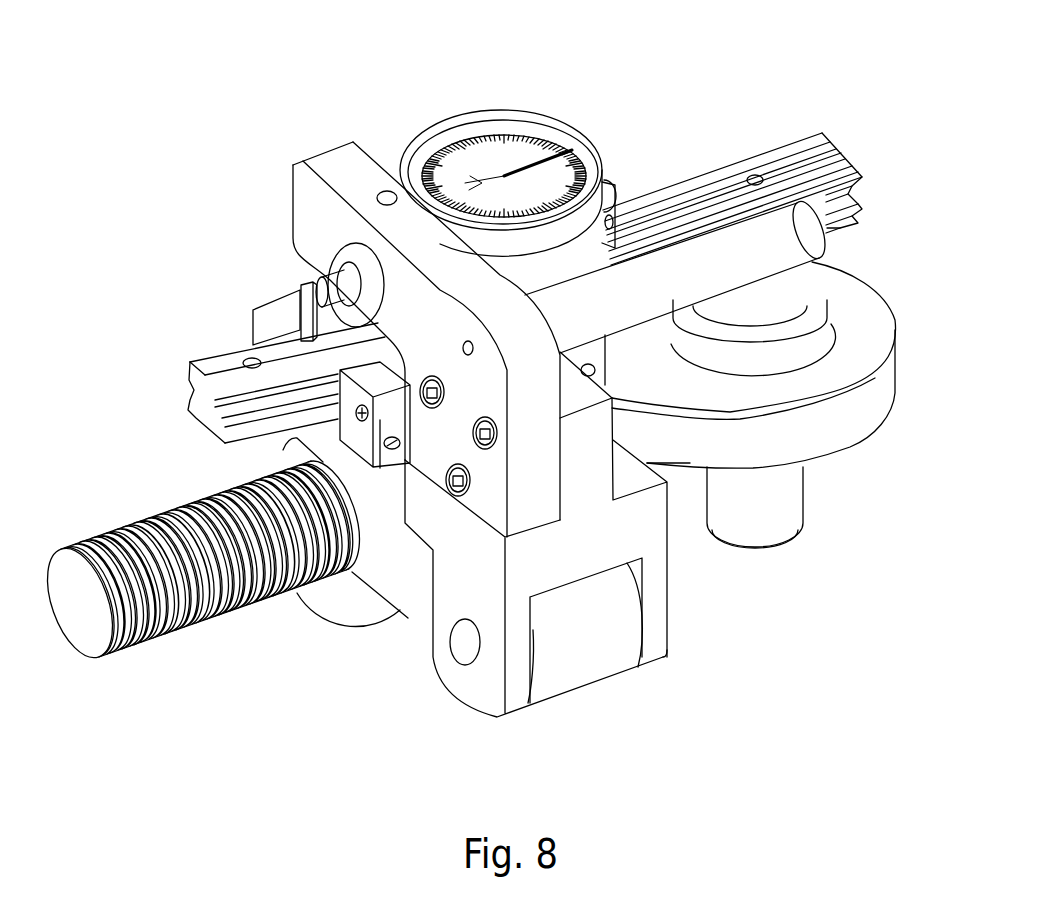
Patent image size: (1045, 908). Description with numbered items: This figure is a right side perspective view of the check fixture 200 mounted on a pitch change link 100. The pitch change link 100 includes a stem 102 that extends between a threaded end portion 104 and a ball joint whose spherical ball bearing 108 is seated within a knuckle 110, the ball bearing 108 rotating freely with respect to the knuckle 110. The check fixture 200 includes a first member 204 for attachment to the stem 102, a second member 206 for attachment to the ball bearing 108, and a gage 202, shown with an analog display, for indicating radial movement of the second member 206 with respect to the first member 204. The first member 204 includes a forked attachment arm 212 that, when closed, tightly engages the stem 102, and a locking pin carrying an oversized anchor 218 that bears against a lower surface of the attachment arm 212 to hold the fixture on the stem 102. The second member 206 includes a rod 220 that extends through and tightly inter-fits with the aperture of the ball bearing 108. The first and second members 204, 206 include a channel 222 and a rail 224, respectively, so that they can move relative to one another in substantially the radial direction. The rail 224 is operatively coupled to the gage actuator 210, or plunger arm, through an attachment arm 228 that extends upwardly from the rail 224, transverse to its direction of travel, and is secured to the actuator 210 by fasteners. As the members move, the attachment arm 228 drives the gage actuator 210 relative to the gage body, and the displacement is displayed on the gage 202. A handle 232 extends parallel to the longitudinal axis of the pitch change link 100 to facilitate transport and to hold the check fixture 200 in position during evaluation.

The pitch change link 100 is at (142, 519).
The stem 102 is at (383, 523).
The threaded end portion 104 is at (185, 625).
The ball bearing 108 is at (820, 337).
The knuckle 110 is at (880, 402).
The check fixture 200 is at (692, 98).
The gage 202 is at (590, 133).
The first member 204 is at (263, 305).
The second member 206 is at (838, 164).
The gage actuator 210 is at (323, 277).
The forked attachment arm 212 is at (413, 607).
The anchor 218 is at (320, 603).
The rod 220 is at (773, 513).
The channel 222 is at (370, 414).
The rail 224 is at (203, 353).
The attachment arm 228 is at (303, 290).
The handle 232 is at (689, 285).